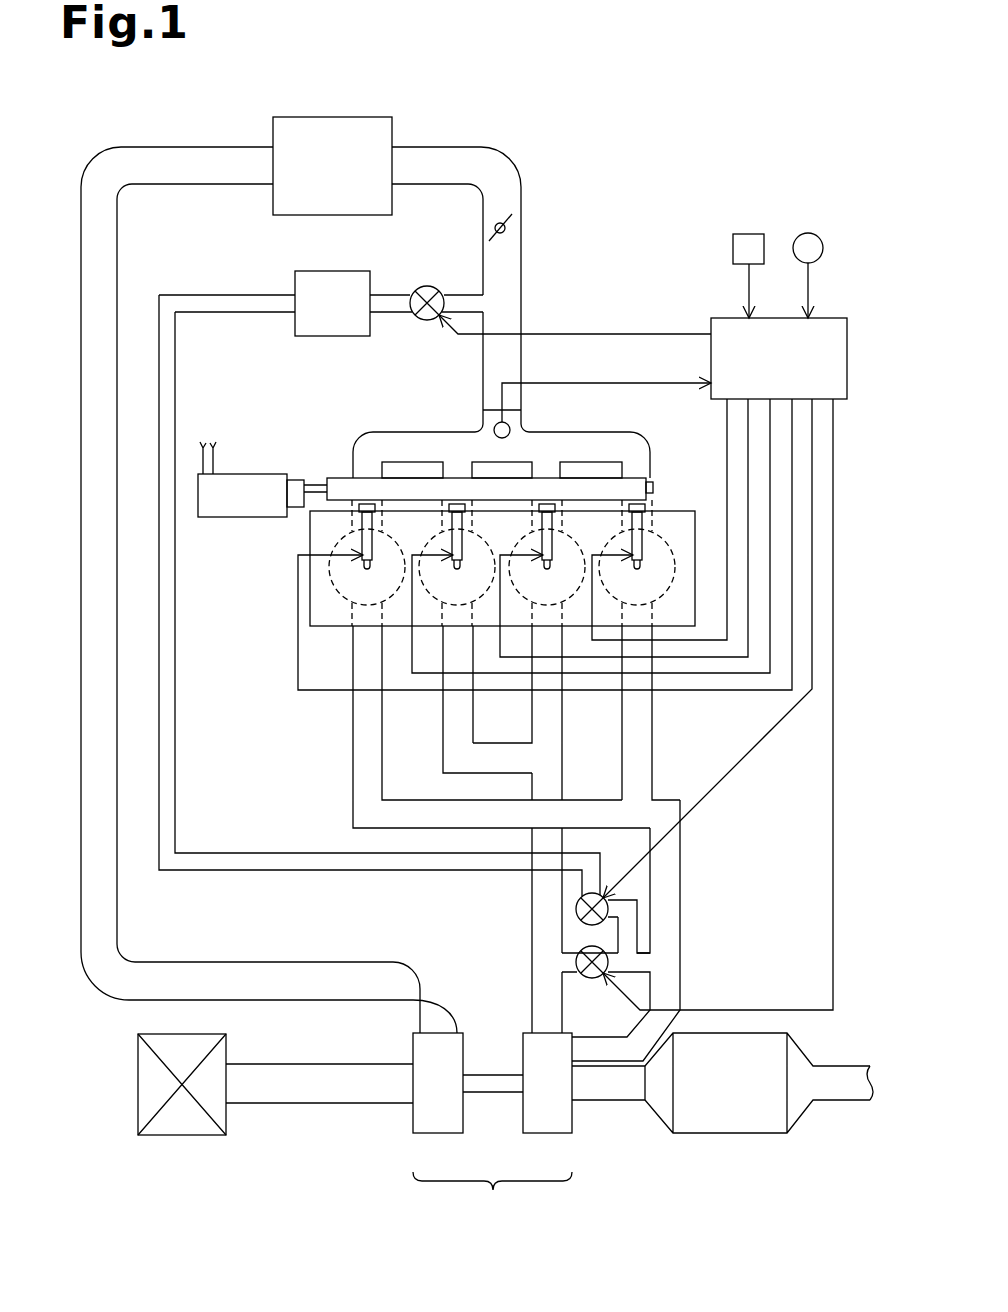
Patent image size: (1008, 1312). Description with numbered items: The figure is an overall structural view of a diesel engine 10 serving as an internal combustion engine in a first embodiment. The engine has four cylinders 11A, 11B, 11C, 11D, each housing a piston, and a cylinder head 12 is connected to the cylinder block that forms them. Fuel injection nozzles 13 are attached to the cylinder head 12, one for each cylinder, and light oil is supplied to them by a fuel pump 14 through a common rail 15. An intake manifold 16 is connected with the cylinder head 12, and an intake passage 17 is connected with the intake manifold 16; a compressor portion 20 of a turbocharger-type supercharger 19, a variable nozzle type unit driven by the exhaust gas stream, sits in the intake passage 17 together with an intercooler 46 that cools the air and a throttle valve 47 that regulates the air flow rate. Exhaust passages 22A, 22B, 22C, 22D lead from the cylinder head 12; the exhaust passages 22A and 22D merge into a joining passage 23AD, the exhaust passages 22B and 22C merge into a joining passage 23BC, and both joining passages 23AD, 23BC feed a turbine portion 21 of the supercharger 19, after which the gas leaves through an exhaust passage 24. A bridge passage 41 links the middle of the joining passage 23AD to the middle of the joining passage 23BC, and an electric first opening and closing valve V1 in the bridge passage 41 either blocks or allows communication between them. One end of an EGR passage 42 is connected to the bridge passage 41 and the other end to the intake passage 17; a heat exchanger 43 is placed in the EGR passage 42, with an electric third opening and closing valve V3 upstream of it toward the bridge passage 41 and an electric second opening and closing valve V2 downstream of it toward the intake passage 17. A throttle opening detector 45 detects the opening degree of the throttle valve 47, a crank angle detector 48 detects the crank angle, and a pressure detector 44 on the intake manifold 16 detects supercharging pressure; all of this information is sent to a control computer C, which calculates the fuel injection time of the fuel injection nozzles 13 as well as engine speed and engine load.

The diesel engine 10 is at (302, 1162).
The cylinder 11A is at (660, 598).
The cylinder 11B is at (567, 598).
The cylinder 11C is at (432, 598).
The cylinder 11D is at (340, 582).
The cylinder head 12 is at (310, 542).
The fuel injection nozzle 13 is at (372, 547).
The fuel pump 14 is at (240, 473).
The common rail 15 is at (340, 478).
The intake manifold 16 is at (403, 430).
The intake passage 17 is at (434, 151).
The turbocharger-type supercharger 19 is at (492, 1196).
The compressor portion 20 is at (440, 1133).
The turbine portion 21 is at (545, 1133).
The exhaust passage 22A is at (654, 756).
The exhaust passage 22B is at (533, 736).
The exhaust passage 22C is at (454, 765).
The exhaust passage 22D is at (353, 729).
The joining passage 23AD is at (680, 907).
The joining passage 23BC is at (532, 899).
The exhaust passage 24 is at (609, 1100).
The bridge passage 41 is at (632, 965).
The EGR passage 42 is at (394, 294).
The heat exchanger 43 is at (328, 336).
The pressure detector 44 is at (493, 425).
The throttle opening detector 45 is at (813, 236).
The intercooler 46 is at (338, 215).
The throttle valve 47 is at (487, 232).
The crank angle detector 48 is at (748, 236).
The control computer C is at (838, 353).
The first opening and closing valve V1 is at (593, 978).
The second opening and closing valve V2 is at (425, 320).
The third opening and closing valve V3 is at (590, 925).